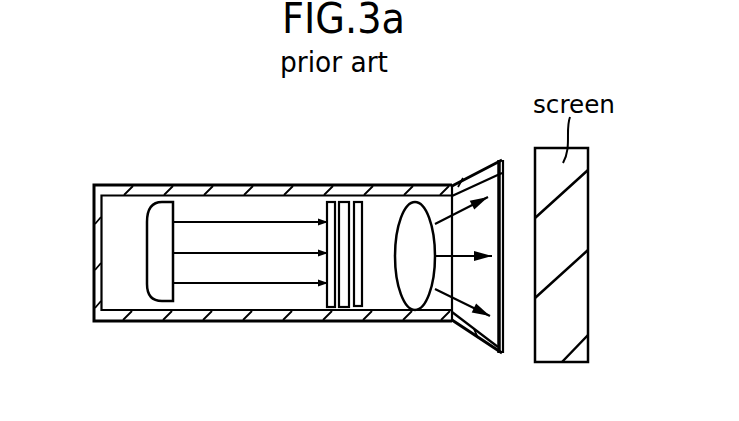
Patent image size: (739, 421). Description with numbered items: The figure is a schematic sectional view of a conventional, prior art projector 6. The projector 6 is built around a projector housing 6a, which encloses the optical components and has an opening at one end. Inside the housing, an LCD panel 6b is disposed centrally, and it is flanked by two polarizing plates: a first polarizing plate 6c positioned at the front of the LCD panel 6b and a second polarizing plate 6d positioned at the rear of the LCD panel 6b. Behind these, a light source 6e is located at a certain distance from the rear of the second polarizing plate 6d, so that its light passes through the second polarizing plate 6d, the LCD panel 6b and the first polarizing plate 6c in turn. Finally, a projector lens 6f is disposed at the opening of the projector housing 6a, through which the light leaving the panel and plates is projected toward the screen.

The conventional projector 6 is at (98, 182).
The projector housing 6a is at (487, 343).
The LCD panel 6b is at (341, 303).
The first polarizing plate 6c is at (366, 303).
The second polarizing plate 6d is at (330, 303).
The light source 6e is at (152, 289).
The projector lens 6f is at (417, 217).